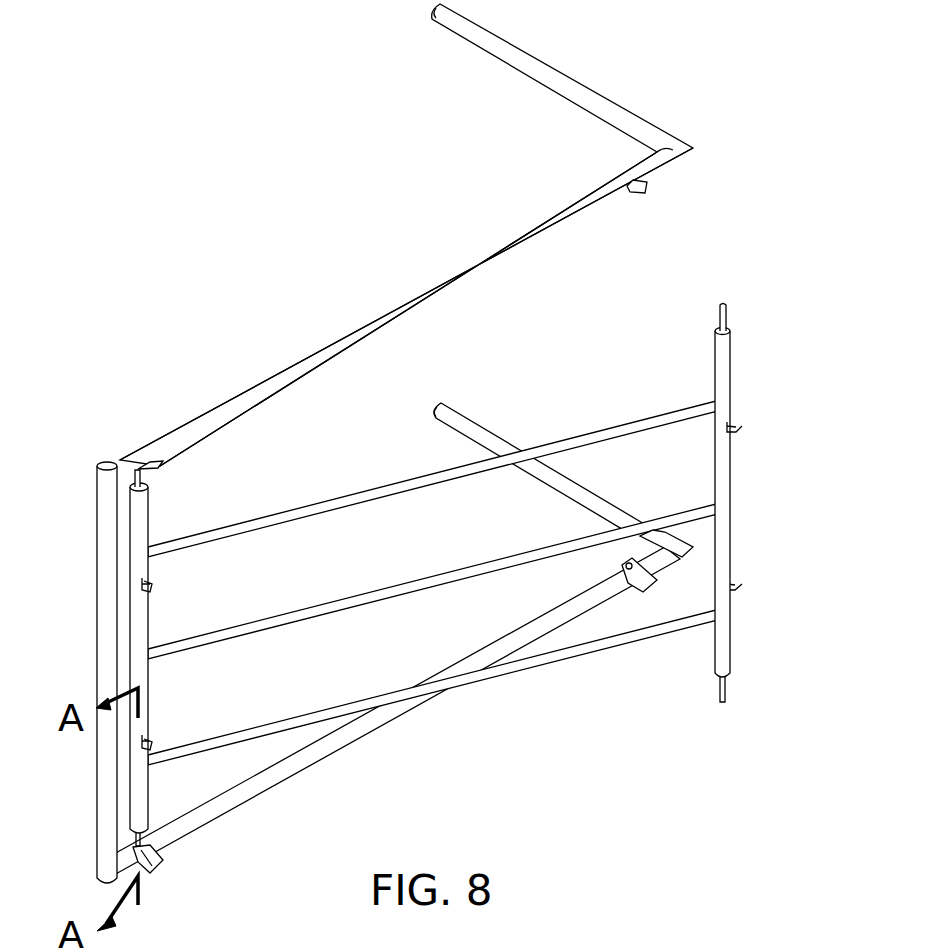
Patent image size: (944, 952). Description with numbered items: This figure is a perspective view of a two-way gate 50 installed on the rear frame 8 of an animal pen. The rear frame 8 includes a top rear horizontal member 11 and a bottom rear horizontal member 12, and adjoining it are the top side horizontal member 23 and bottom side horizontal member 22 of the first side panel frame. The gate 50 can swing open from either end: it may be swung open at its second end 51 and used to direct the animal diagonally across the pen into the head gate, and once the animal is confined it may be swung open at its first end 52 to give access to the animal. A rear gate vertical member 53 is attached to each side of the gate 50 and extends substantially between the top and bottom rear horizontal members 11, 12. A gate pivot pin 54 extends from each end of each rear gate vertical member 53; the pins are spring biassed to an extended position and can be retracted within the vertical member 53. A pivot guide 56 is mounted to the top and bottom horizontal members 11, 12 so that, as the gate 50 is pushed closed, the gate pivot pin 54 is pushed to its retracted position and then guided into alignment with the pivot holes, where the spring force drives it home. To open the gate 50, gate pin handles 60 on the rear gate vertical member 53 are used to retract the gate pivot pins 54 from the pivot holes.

The rear frame 8 is at (160, 436).
The top rear horizontal member 11 is at (352, 328).
The bottom rear horizontal member 12 is at (300, 765).
The bottom side horizontal member 22 is at (436, 412).
The top side horizontal member 23 is at (553, 72).
The two-way gate 50 is at (322, 713).
The second end 51 is at (150, 710).
The first end 52 is at (735, 380).
The rear gate vertical member 53 is at (130, 612).
The gate pivot pin 54 is at (728, 312).
The pivot guide 56 is at (648, 186).
The gate pin handle 60 is at (745, 428).